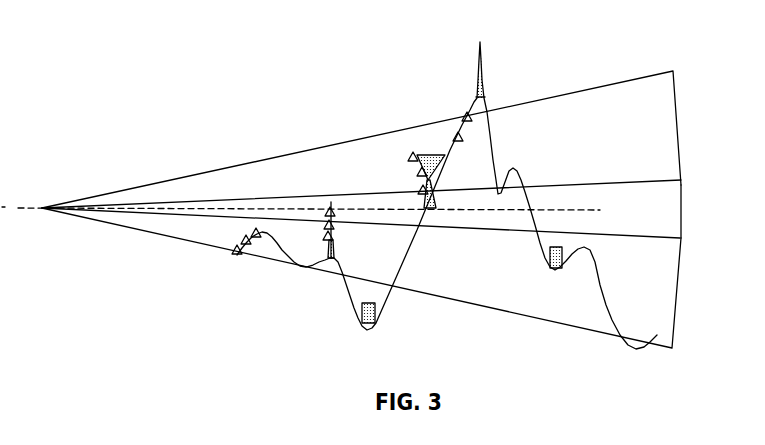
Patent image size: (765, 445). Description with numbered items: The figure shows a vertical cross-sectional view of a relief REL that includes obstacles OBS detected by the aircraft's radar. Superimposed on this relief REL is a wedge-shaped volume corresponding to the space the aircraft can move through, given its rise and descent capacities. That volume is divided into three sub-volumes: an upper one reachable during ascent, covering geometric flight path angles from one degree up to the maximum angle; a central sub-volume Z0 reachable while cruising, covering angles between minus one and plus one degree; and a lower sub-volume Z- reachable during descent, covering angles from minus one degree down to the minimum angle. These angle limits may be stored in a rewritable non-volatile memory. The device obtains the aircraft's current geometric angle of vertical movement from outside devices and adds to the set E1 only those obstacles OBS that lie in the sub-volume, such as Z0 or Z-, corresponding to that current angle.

The cruise sub-volume Z0 is at (341, 209).
The descent sub-volume Z- is at (361, 278).
The set of obstacles E1 is at (230, 255).
The relief REL is at (232, 254).
The obstacles OBS is at (428, 152).